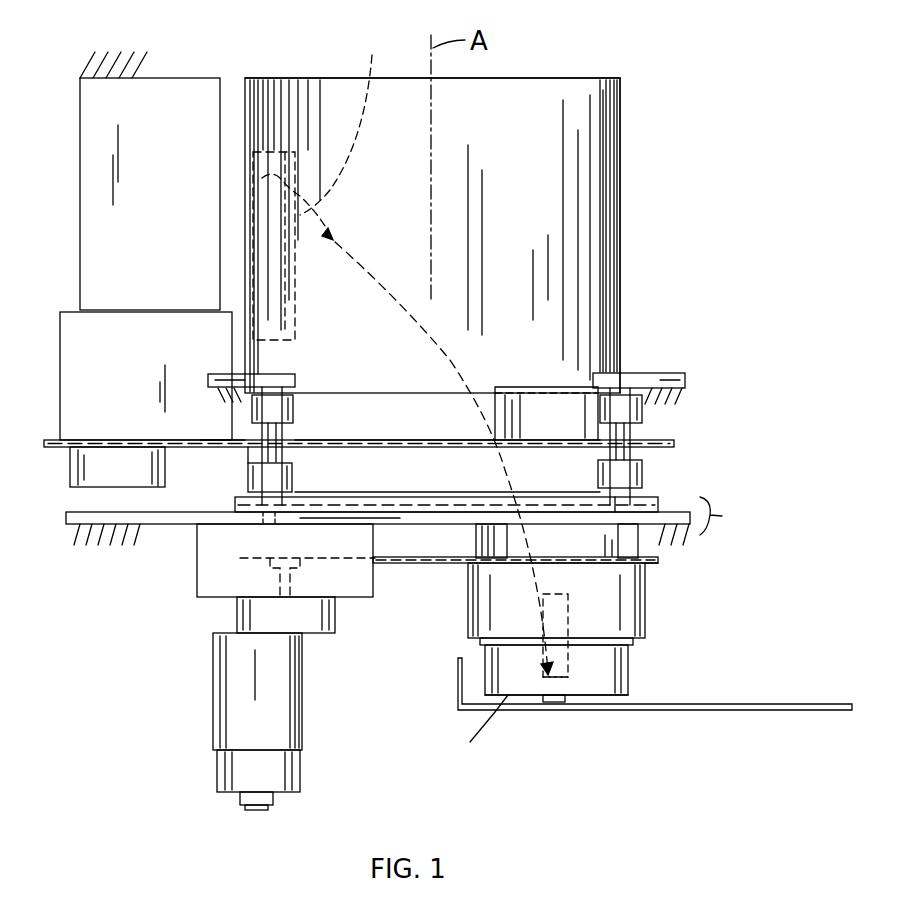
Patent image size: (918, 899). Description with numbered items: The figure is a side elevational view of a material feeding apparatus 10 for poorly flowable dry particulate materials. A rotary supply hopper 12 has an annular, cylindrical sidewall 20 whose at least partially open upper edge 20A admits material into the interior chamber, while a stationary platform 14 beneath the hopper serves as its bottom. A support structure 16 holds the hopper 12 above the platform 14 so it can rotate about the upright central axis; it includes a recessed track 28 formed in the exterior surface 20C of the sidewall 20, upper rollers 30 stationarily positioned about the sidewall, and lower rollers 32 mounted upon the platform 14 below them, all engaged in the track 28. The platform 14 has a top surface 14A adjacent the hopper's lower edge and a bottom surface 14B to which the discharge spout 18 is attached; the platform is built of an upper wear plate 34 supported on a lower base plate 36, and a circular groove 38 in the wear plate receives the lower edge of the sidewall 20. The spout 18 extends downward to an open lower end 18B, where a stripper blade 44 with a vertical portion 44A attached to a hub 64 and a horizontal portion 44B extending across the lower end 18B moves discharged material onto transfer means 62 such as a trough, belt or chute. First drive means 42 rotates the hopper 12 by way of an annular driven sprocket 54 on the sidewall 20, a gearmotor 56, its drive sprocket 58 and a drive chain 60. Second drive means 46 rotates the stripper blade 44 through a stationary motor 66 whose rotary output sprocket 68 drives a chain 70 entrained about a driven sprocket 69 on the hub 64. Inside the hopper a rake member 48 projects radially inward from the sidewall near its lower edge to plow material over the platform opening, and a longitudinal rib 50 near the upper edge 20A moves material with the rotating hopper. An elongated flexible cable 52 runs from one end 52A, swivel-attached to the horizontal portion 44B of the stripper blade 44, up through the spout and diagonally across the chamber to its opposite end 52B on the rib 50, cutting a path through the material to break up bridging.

The material feeding apparatus 10 is at (655, 63).
The rotary supply hopper 12 is at (620, 140).
The stationary platform 14 is at (724, 516).
The top surface of the platform 14A is at (660, 498).
The bottom surface of the platform 14B is at (400, 526).
The support structure 16 is at (217, 374).
The discharge spout 18 is at (631, 661).
The open lower end of the discharge spout 18B is at (622, 697).
The annular sidewall 20 is at (622, 206).
The upper edge of the sidewall 20A is at (518, 78).
The exterior surface of the sidewall 20C is at (605, 270).
The recessed track 28 is at (256, 455).
The upper rollers 30 is at (296, 408).
The lower rollers 32 is at (296, 470).
The upper wear plate 34 is at (237, 504).
The lower base plate 36 is at (142, 530).
The circular groove 38 is at (450, 497).
The first drive means 42 is at (179, 78).
The stripper blade 44 is at (540, 702).
The vertical portion of the stripper blade 44A is at (572, 630).
The horizontal portion of the stripper blade 44B is at (562, 703).
The second drive means 46 is at (200, 657).
The rake member 48 is at (525, 387).
The longitudinal rib 50 is at (298, 150).
The elongated flexible cable 52 is at (375, 277).
The one end of the cable 52A is at (481, 732).
The opposite end of the cable 52B is at (350, 120).
The driven sprocket 54 is at (450, 437).
The gearmotor 56 is at (60, 370).
The drive sprocket 58 is at (92, 440).
The drive chain 60 is at (222, 440).
The transfer means 62 is at (770, 712).
The hub 64 is at (646, 618).
The motor 66 is at (303, 706).
The rotary output sprocket 68 is at (245, 562).
The driven sprocket 69 is at (650, 563).
The chain 70 is at (447, 565).